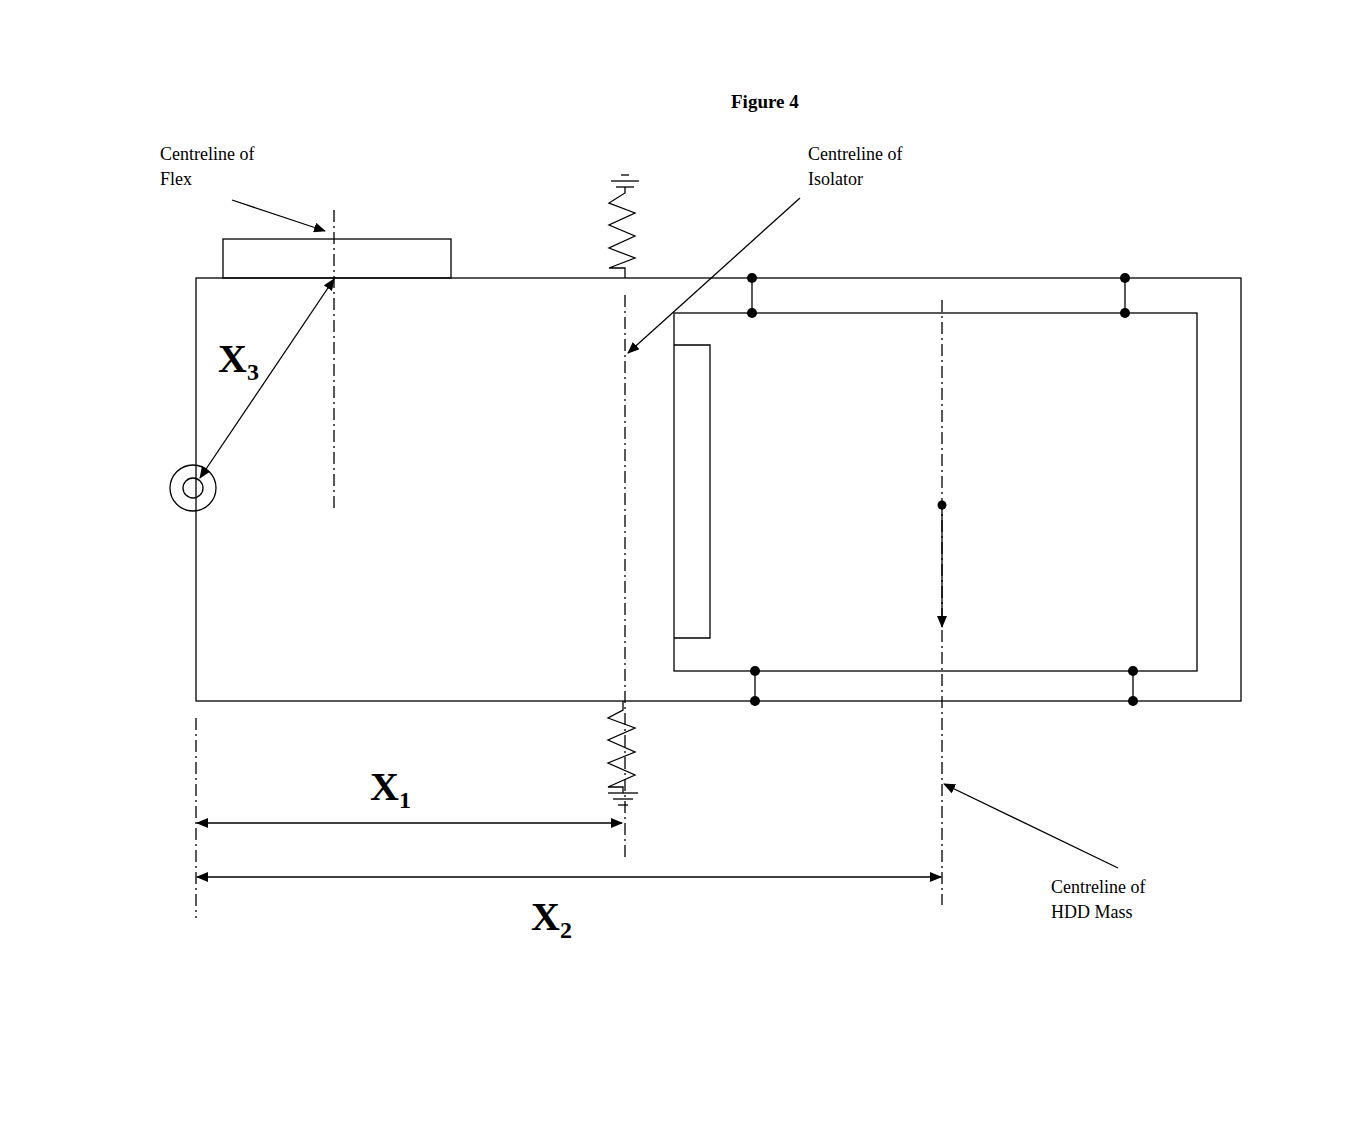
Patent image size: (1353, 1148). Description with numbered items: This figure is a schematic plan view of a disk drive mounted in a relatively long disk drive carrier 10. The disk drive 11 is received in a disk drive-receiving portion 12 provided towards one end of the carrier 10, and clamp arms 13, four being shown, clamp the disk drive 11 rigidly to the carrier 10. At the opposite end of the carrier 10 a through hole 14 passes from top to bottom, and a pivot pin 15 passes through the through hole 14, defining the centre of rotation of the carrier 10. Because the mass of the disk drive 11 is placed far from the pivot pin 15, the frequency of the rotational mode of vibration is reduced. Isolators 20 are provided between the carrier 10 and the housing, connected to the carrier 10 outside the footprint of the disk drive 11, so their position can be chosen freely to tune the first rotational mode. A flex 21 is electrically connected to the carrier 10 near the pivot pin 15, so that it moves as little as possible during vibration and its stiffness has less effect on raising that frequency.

The disk drive carrier 10 is at (1244, 345).
The disk drive 11 is at (1200, 556).
The disk drive-receiving portion 12 is at (1200, 466).
The clamp arms 13 is at (757, 297).
The through hole 14 is at (186, 514).
The pivot pin 15 is at (184, 472).
The isolators 20 is at (637, 225).
The flex 21 is at (370, 239).